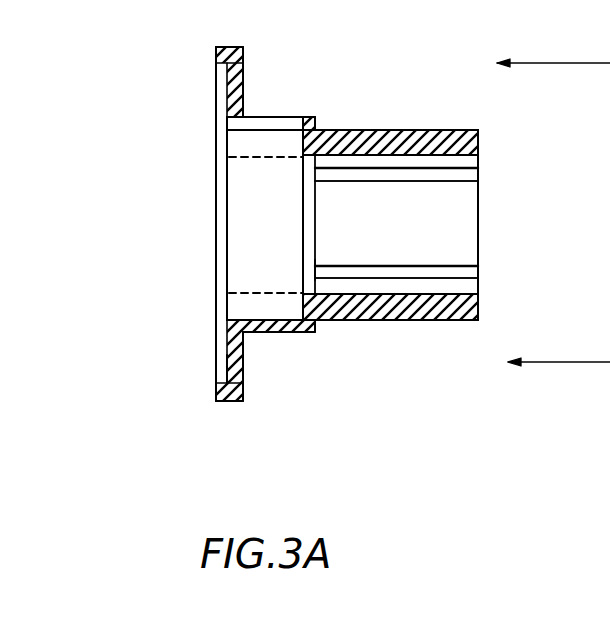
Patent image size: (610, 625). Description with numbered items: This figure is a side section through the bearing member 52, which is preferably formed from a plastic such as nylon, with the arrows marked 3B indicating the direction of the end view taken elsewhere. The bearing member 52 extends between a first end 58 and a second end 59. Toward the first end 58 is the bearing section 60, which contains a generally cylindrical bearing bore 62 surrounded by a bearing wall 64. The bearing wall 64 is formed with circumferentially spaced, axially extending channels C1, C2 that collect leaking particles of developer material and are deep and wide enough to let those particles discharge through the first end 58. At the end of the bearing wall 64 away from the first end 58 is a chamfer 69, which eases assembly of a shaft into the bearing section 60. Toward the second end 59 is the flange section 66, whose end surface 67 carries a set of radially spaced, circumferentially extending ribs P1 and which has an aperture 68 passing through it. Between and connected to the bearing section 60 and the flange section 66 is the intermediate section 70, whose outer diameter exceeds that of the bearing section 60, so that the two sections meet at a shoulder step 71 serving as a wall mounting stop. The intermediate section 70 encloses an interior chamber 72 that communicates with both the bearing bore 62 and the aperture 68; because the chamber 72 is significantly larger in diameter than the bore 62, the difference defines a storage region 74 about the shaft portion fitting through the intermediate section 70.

The bearing member 52 is at (347, 104).
The first end 58 is at (479, 302).
The second end 59 is at (216, 56).
The bearing section 60 is at (398, 321).
The bearing bore 62 is at (396, 223).
The bearing wall 64 is at (479, 228).
The flange section 66 is at (243, 366).
The end surface 67 is at (216, 90).
The aperture 68 is at (216, 241).
The chamfer 69 is at (303, 269).
The intermediate section 70 is at (278, 116).
The shoulder step 71 is at (318, 128).
The interior chamber 72 is at (265, 225).
The storage region 74 is at (237, 156).
The channel C1 is at (479, 178).
The channel C2 is at (479, 268).
The ribs P1 is at (216, 110).
The section direction 3B— 3B is at (548, 215).